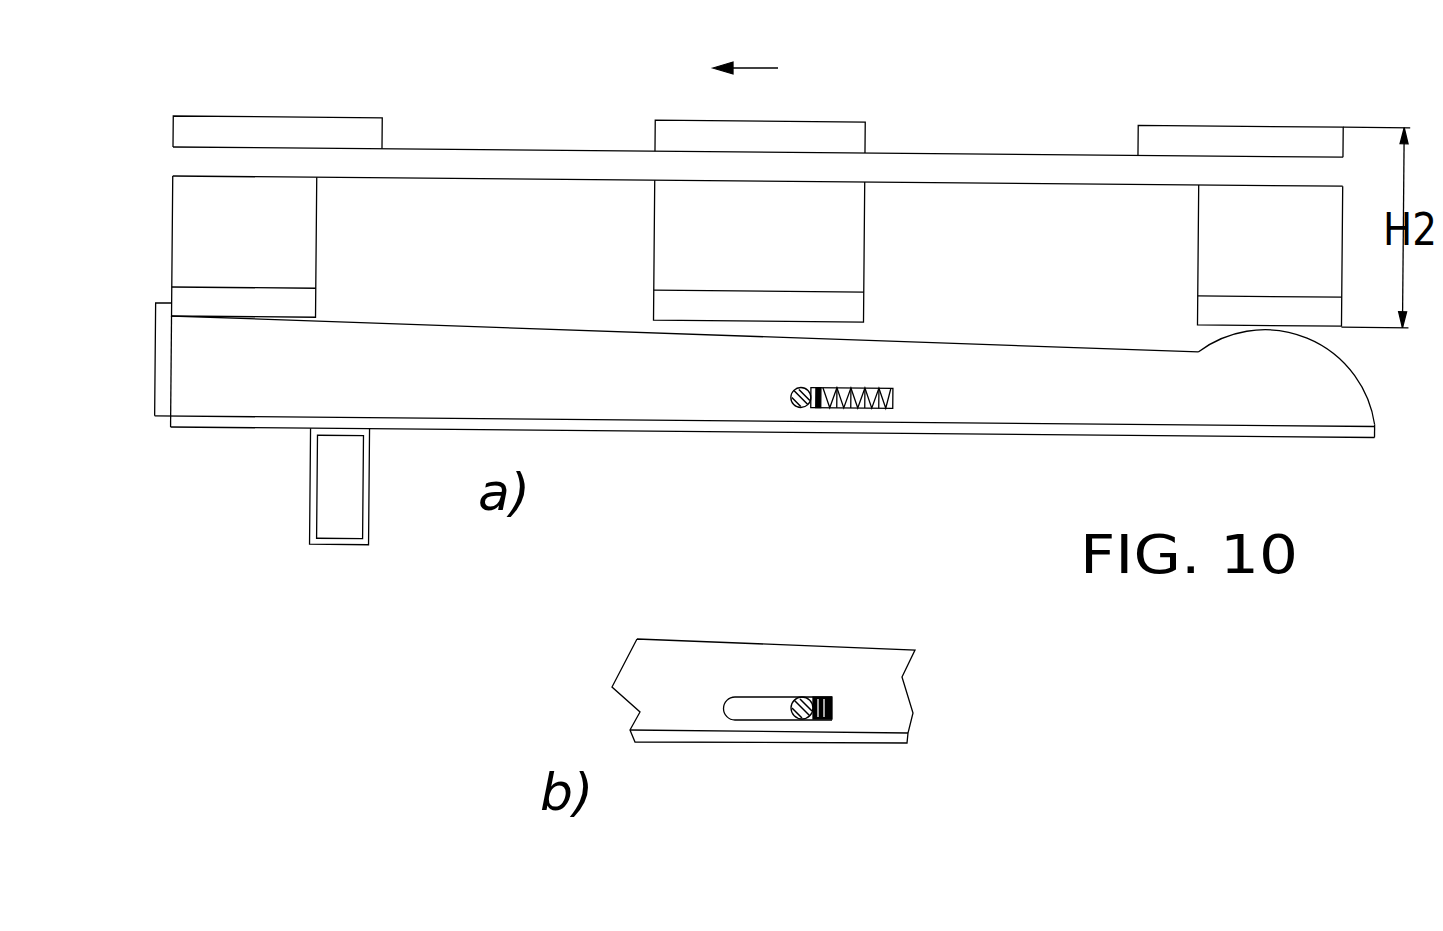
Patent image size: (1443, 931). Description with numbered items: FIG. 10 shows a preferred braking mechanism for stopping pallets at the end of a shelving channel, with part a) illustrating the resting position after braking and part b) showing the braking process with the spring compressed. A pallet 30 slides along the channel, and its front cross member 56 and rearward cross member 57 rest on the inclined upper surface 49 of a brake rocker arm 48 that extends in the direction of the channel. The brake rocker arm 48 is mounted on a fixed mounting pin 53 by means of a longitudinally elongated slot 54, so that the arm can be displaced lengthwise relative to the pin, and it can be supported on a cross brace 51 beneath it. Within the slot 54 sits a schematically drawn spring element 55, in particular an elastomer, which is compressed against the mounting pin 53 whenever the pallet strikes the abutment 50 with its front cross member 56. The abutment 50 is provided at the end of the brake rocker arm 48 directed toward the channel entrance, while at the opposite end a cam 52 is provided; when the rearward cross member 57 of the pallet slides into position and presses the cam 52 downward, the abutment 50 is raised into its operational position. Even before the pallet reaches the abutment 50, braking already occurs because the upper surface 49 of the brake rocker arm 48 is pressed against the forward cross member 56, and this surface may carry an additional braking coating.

The pallet 30 is at (852, 138).
The brake rocker arm 48 is at (497, 401).
The inclined surface 49 is at (487, 323).
The abutment 50 is at (157, 375).
The cross brace 51 is at (315, 513).
The cam 52 is at (1255, 357).
The mounting pin 53 is at (799, 698).
The longitudinally elongated slot 54 is at (748, 705).
The spring element 55 is at (868, 410).
The front cross member 56 is at (243, 230).
The rearward cross member 57 is at (1300, 235).